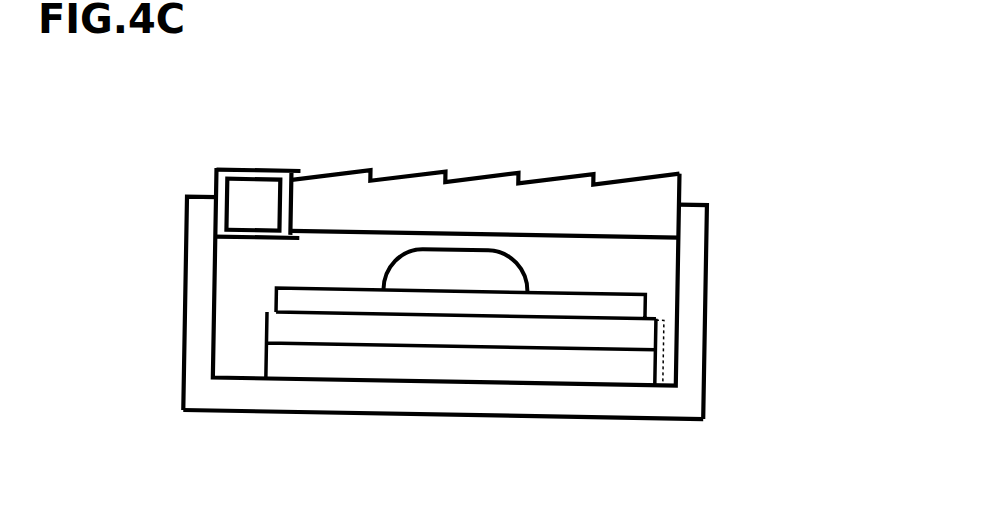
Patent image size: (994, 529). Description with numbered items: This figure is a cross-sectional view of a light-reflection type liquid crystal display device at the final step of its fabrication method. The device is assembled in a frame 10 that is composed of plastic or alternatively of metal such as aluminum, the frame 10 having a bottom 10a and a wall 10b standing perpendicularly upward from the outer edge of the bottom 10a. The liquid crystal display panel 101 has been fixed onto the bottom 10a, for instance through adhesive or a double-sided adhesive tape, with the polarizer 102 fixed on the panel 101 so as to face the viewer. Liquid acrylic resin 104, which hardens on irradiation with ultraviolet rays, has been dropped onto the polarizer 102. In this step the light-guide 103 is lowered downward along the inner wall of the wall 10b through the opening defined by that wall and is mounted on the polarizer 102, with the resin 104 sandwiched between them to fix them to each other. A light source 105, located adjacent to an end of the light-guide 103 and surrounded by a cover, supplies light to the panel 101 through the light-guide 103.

The frame 10 is at (197, 247).
The bottom 10a is at (591, 0).
The wall 10b is at (698, 244).
The liquid crystal display panel 101 is at (670, 355).
The polarizer 102 is at (647, 305).
The light-guide 103 is at (557, 172).
The resin layer 104 is at (505, 287).
The light source 105 is at (252, 179).